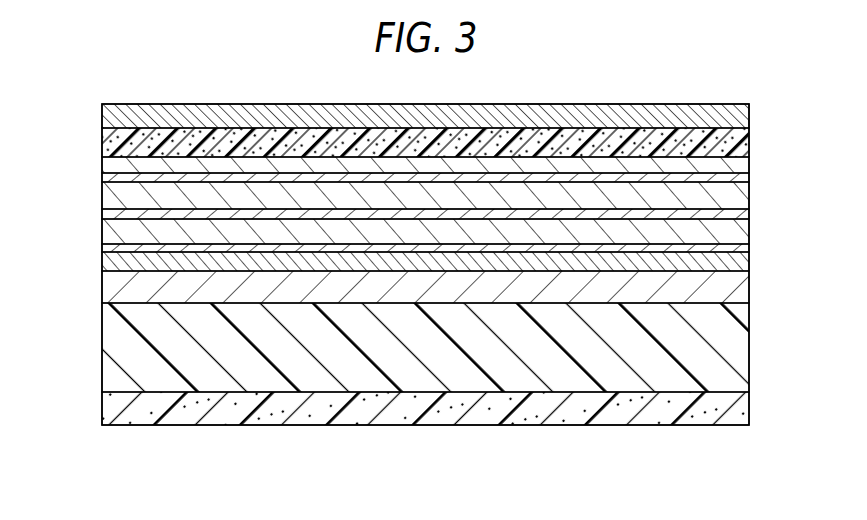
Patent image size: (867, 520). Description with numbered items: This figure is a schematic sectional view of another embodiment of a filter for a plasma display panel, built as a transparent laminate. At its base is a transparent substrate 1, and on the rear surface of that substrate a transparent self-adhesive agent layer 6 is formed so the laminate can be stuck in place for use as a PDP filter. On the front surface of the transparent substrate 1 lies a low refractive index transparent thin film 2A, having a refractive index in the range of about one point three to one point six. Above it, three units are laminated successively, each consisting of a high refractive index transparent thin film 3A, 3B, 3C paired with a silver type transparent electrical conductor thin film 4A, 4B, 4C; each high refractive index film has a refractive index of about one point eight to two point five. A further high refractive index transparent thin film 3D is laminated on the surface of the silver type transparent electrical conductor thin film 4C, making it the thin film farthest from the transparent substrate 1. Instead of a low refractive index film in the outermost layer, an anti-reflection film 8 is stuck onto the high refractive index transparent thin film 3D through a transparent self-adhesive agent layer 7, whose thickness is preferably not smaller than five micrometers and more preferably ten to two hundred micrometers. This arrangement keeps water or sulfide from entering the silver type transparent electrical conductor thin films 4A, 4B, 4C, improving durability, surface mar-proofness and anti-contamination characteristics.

The transparent substrate 1 is at (102, 347).
The transparent self-adhesive agent layer 6 is at (102, 411).
The low refractive index transparent thin film 2A is at (740, 290).
The high refractive index transparent thin film 3A is at (740, 260).
The high refractive index transparent thin film 3B is at (740, 228).
The high refractive index transparent thin film 3C is at (740, 192).
The high refractive index transparent thin film 3D is at (737, 160).
The silver type transparent electrical conductor thin film 4A is at (102, 251).
The silver type transparent electrical conductor thin film 4B is at (102, 215).
The silver type transparent electrical conductor thin film 4C is at (102, 178).
The transparent self-adhesive agent layer 7 is at (102, 147).
The anti-reflection film 8 is at (102, 120).